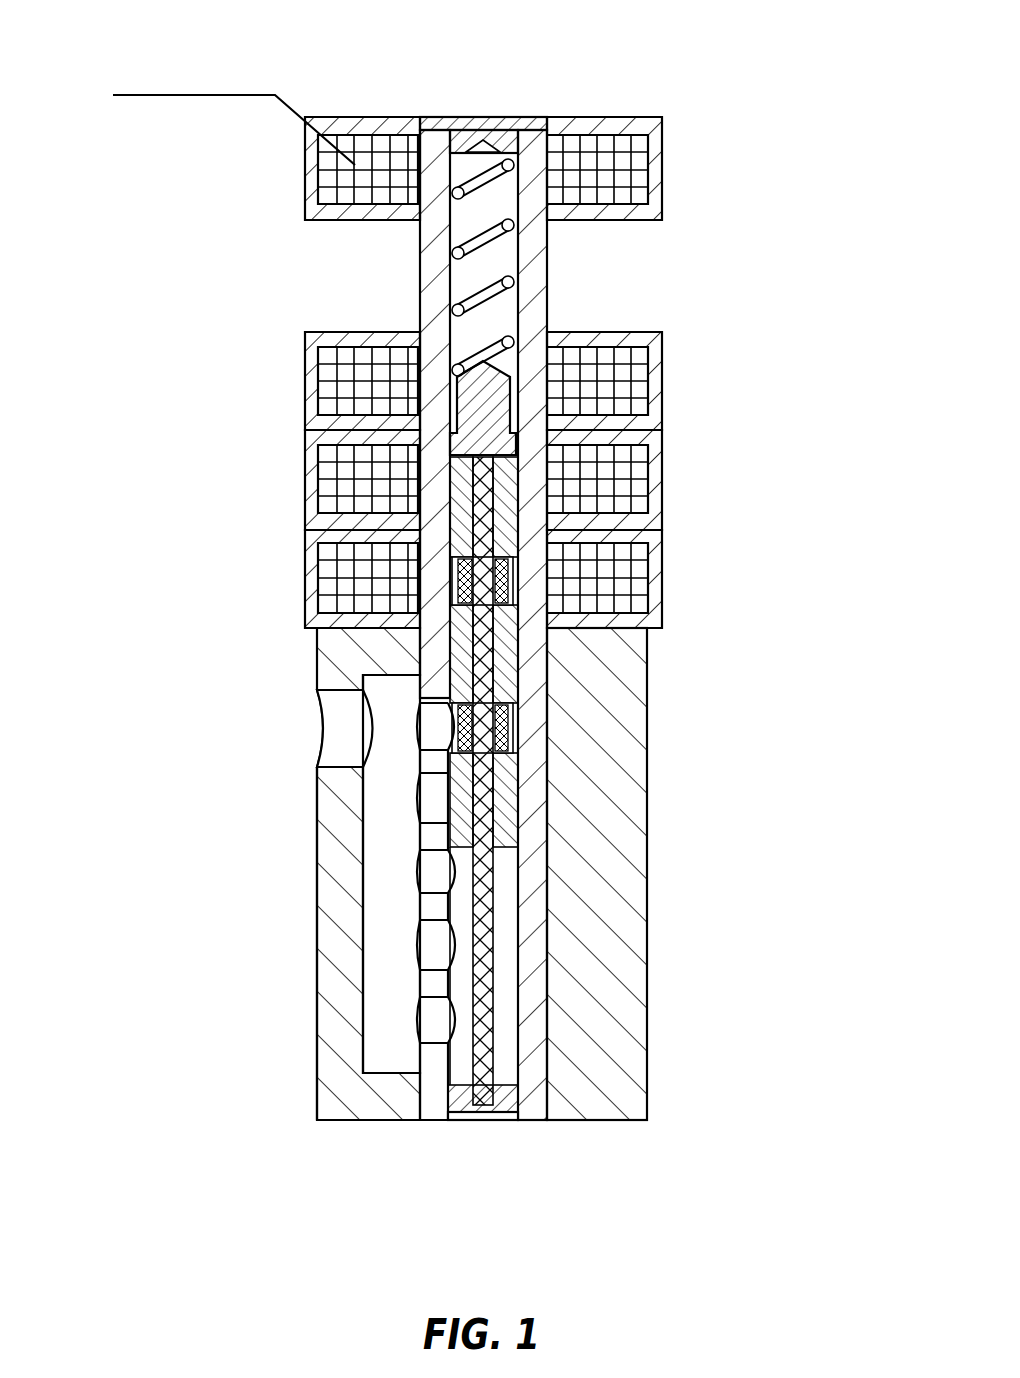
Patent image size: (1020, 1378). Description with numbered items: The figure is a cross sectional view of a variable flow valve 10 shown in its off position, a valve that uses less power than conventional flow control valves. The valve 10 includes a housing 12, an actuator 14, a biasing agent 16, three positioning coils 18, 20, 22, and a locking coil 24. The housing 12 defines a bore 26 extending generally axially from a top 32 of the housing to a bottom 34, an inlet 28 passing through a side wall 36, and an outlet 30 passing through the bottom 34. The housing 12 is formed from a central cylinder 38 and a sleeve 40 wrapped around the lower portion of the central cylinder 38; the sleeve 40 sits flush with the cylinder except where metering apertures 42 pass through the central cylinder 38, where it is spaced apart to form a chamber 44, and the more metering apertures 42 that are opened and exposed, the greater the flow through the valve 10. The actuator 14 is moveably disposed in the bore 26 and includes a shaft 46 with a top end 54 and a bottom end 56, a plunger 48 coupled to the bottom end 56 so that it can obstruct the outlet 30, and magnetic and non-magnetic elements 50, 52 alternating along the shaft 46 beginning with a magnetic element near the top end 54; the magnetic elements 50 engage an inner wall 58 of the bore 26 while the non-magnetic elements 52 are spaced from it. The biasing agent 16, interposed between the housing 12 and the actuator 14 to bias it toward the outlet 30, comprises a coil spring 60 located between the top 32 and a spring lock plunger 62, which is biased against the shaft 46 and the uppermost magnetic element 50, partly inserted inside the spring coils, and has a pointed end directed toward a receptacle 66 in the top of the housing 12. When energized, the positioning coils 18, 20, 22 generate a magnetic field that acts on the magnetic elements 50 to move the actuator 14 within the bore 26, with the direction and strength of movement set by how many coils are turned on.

The variable flow valve 10 is at (268, 455).
The housing 12 is at (296, 941).
The actuator 14 is at (514, 806).
The biasing agent 16 is at (462, 286).
The positioning coil 18 is at (615, 372).
The positioning coil 20 is at (617, 487).
The positioning coil 22 is at (617, 565).
The locking coil 24 is at (625, 178).
The bore 26 is at (547, 918).
The inlet 28 is at (314, 728).
The outlet 30 is at (490, 1126).
The top 32 is at (350, 86).
The bottom 34 is at (361, 1167).
The side wall 36 is at (317, 806).
The central cylinder 38 is at (550, 1045).
The sleeve 40 is at (605, 1020).
The metering apertures 42 is at (418, 957).
The chamber 44 is at (389, 880).
The shaft 46 is at (503, 958).
The plunger 48 is at (456, 1120).
The magnetic elements 50 is at (547, 642).
The non-magnetic elements 52 is at (513, 706).
The top end 54 is at (487, 468).
The bottom end 56 is at (476, 1080).
The inner wall 58 is at (512, 318).
The coil spring 60 is at (483, 340).
The spring lock plunger 62 is at (460, 357).
The receptacle 66 is at (497, 117).